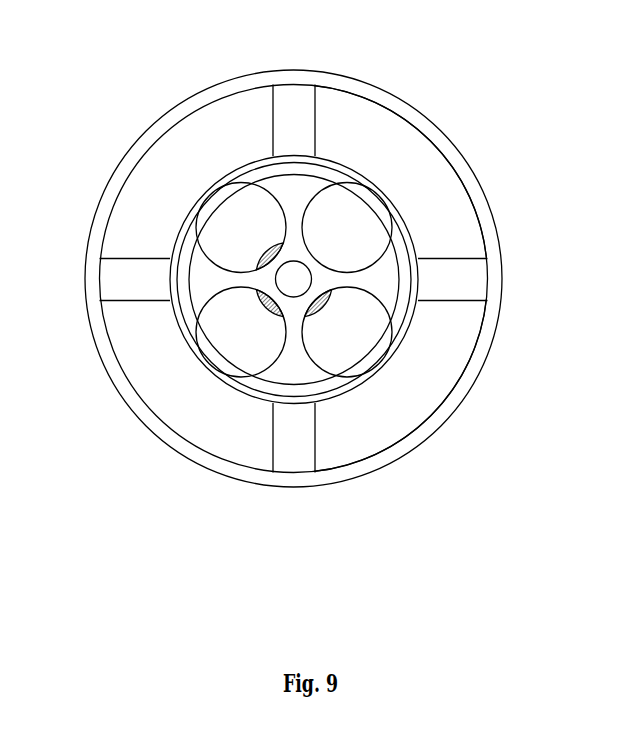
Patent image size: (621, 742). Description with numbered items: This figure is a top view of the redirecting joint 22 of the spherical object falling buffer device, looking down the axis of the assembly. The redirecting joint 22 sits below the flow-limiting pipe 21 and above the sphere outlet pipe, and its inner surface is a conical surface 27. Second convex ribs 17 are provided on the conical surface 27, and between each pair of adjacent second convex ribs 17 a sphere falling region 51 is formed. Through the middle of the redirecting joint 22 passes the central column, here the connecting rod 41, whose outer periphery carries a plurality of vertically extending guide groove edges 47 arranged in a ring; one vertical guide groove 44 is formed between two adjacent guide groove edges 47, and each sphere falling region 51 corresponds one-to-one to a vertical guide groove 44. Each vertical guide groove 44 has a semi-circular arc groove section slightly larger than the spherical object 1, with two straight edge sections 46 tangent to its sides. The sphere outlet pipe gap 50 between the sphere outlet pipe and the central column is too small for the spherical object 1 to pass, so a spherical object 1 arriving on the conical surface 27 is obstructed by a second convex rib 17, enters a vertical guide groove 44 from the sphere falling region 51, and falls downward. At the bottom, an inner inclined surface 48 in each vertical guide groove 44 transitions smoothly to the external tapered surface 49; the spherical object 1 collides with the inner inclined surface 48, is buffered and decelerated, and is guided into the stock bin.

The spherical object 1 is at (364, 219).
The second convex rib 17 is at (478, 283).
The flow-limiting pipe 21 is at (490, 247).
The redirecting joint 22 is at (222, 435).
The conical surface 27 is at (362, 128).
The connecting rod 41 is at (267, 201).
The vertical guide groove 44 is at (242, 302).
The straight edge section 46 is at (273, 263).
The guide groove edge 47 is at (209, 282).
The inner inclined surface 48 is at (343, 333).
The external tapered surface 49 is at (350, 378).
The sphere outlet pipe gap 50 is at (325, 398).
The sphere falling region 51 is at (443, 372).